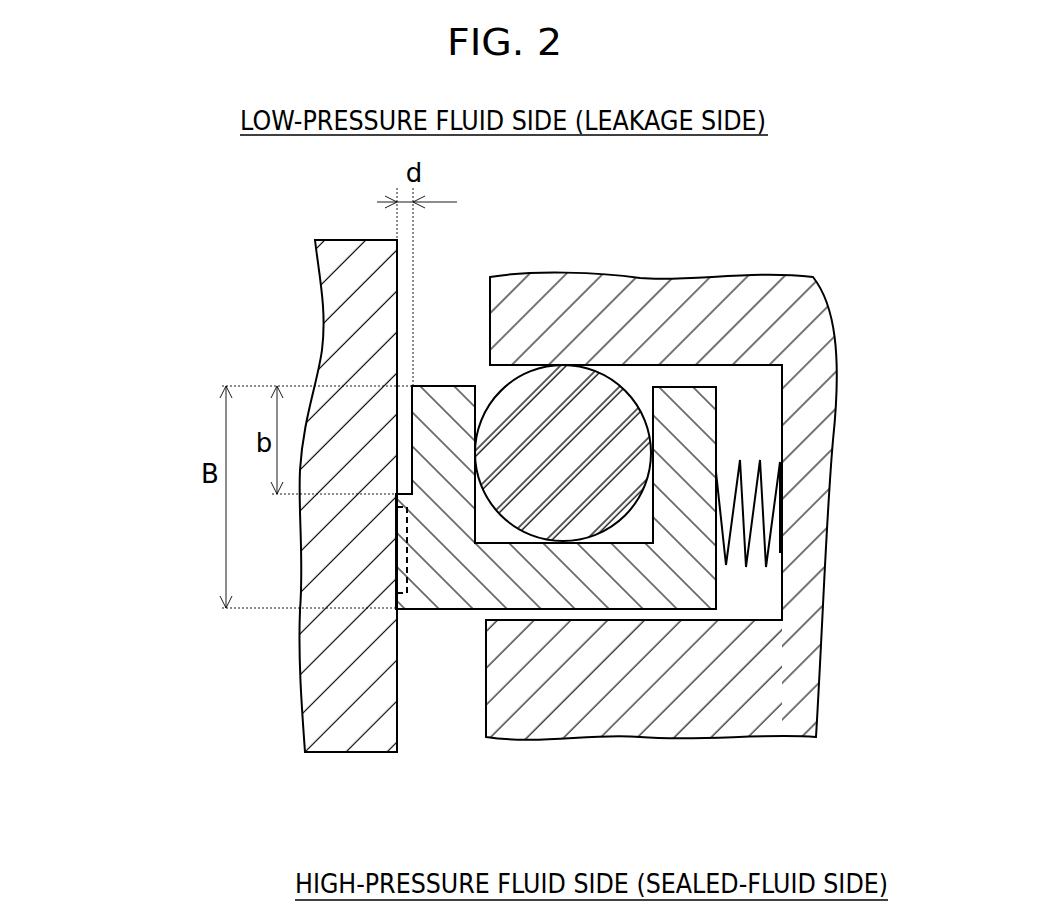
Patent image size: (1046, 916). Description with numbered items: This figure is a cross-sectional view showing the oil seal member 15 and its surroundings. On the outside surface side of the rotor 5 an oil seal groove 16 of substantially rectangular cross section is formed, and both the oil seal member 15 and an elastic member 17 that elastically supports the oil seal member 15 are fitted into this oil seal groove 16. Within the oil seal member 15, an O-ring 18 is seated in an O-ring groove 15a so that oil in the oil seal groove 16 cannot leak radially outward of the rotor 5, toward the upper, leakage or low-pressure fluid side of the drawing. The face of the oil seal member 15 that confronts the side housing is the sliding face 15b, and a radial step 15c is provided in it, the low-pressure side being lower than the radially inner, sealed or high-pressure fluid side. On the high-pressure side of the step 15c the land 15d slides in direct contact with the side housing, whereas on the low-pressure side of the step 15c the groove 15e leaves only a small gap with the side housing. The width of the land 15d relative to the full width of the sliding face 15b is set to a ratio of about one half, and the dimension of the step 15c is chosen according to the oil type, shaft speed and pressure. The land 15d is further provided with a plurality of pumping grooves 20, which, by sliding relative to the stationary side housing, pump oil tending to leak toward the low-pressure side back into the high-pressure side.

The rotor 5 is at (708, 297).
The oil seal member 15 is at (448, 390).
The O-ring groove 15a is at (640, 522).
The sliding face 15b is at (150, 287).
The radial step 15c is at (473, 530).
The land 15d is at (307, 580).
The groove 15e is at (412, 430).
The oil seal groove 16 is at (781, 424).
The elastic member 17 is at (778, 462).
The O-ring 18 is at (605, 390).
The pumping grooves 20 is at (412, 478).